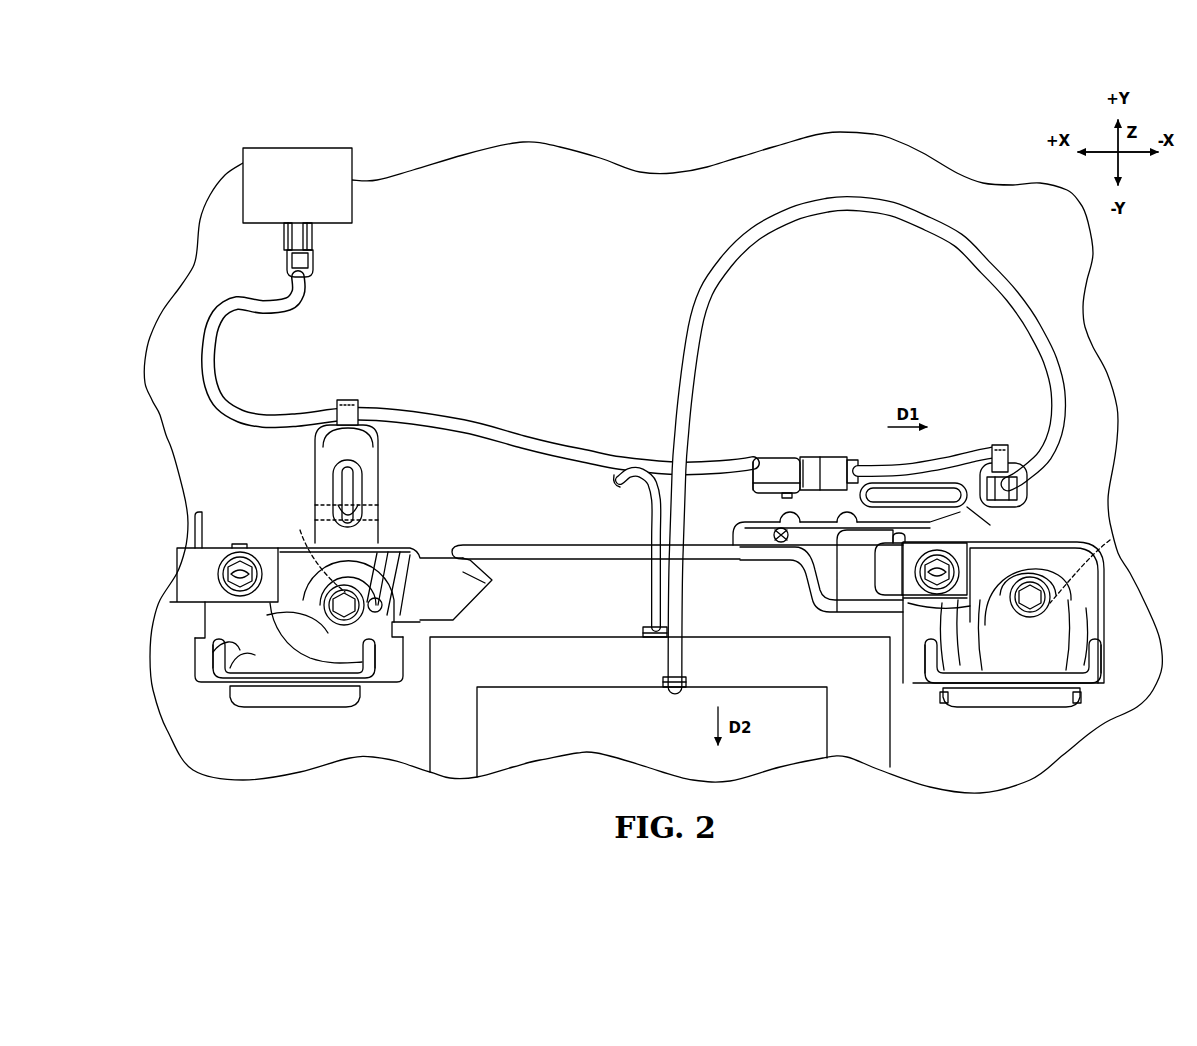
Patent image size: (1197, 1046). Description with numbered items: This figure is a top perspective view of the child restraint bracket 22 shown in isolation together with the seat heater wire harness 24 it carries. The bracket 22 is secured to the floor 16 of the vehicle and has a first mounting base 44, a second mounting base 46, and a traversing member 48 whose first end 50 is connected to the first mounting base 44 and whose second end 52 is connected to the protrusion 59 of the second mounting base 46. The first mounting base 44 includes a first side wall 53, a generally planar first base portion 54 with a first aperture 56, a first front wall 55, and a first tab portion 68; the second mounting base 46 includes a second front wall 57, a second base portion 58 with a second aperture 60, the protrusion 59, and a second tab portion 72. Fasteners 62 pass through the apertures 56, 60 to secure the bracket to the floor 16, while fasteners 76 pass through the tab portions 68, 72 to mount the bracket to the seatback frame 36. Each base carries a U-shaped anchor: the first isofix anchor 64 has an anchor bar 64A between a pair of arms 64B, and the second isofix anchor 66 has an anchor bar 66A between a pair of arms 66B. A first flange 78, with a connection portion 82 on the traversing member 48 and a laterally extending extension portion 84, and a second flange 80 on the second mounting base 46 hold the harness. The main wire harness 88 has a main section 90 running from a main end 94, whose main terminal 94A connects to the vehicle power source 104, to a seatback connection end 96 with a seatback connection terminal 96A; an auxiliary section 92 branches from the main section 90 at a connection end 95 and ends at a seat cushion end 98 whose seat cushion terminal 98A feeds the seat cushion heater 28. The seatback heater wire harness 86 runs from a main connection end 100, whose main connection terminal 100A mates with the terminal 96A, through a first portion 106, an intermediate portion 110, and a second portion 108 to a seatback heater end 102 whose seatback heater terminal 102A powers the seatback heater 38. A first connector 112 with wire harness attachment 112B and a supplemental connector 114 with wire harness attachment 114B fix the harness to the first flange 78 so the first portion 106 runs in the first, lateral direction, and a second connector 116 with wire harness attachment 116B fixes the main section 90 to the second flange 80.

The floor 16 is at (589, 263).
The child restraint bracket 22 is at (1132, 547).
The seat heater wire harness 24 is at (983, 197).
The seat cushion heater 28 is at (890, 742).
The seatback frame 36 is at (175, 578).
The seatback heater 38 is at (830, 738).
The first mounting base 44 is at (1112, 597).
The second mounting base 46 is at (200, 634).
The traversing member 48 is at (540, 543).
The first end 50 is at (900, 607).
The second end 52 is at (472, 566).
The first side wall 53 is at (1112, 577).
The first base portion 54 is at (1052, 572).
The first front wall 55 is at (1055, 705).
The first aperture 56 is at (1110, 534).
The second front wall 57 is at (322, 705).
The second base portion 58 is at (267, 617).
The protrusion 59 is at (437, 575).
The second aperture 60 is at (316, 553).
The fasteners 62 is at (333, 598).
The first isofix anchor 64 is at (1100, 700).
The anchor bar 64A is at (1020, 690).
The pair of arms 64B is at (1095, 655).
The second isofix anchor 66 is at (215, 709).
The anchor bar 66A is at (280, 700).
The pair of arms 66B is at (220, 667).
The first tab portion 68 is at (883, 572).
The second tab portion 72 is at (213, 542).
The fasteners 76 is at (975, 538).
The first flange 78 is at (750, 520).
The second flange 80 is at (383, 481).
The connection portion 82 is at (740, 533).
The extension portion 84 is at (972, 480).
The seatback heater wire harness 86 is at (993, 322).
The main wire harness 88 is at (492, 408).
The main section 90 is at (545, 438).
The auxiliary section 92 is at (652, 508).
The main end 94 is at (318, 252).
The main terminal 94A is at (312, 237).
The connection end 95 is at (628, 463).
The seatback connection end 96 is at (762, 455).
The seatback connection terminal 96A is at (780, 458).
The seat cushion end 98 is at (638, 627).
The seat cushion terminal 98A is at (652, 635).
The main connection end 100 is at (838, 441).
The main connection terminal 100A is at (804, 456).
The seatback heater end 102 is at (690, 682).
The seatback heater terminal 102A is at (662, 684).
The vehicle power source 104 is at (353, 192).
The first portion 106 is at (958, 448).
The second portion 108 is at (692, 607).
The intermediate portion 110 is at (893, 197).
The first connector 112 is at (865, 462).
The wire harness attachment 112B is at (832, 440).
The supplemental connector 114 is at (1032, 480).
The wire harness attachment 114B is at (1000, 444).
The second connector 116 is at (310, 437).
The wire harness attachment 116B is at (353, 400).